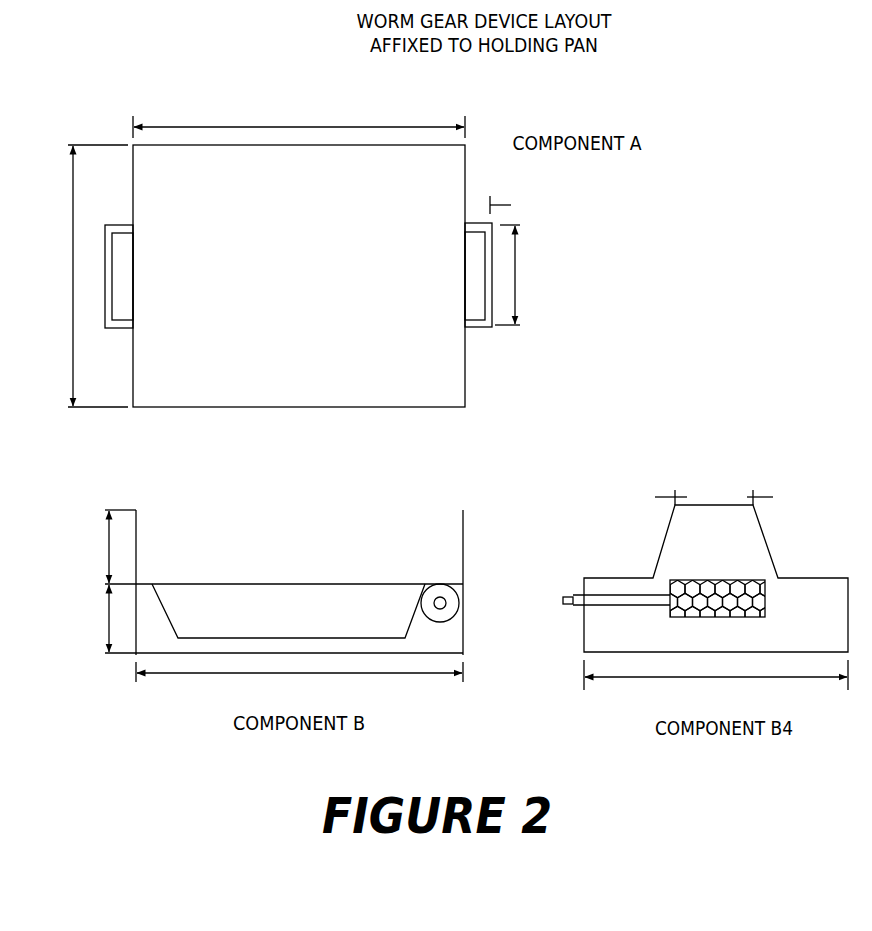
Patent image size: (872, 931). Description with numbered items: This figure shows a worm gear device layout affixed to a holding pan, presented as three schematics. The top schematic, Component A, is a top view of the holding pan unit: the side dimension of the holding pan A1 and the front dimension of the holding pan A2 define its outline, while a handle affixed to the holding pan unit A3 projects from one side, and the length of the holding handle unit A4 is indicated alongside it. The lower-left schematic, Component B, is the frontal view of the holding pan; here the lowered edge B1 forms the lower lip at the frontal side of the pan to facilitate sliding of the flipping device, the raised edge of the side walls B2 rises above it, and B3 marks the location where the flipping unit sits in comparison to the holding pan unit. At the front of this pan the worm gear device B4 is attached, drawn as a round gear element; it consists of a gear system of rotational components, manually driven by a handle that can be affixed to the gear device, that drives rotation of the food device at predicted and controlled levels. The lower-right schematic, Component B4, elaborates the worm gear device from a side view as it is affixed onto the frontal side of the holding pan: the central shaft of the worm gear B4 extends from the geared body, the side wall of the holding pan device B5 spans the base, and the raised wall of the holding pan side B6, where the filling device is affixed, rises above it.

The side dimension of the holding pan A1 is at (81, 276).
The front dimension of the holding pan A2 is at (299, 117).
The handle affixed to the holding pan unit A3 is at (536, 196).
The length of the holding handle unit A4 is at (527, 275).
The lowered edge of the holding pan (frontal view) B1 is at (299, 679).
The raised edge of the side walls of the holding pan B2 is at (101, 618).
The location of the flipping unit B3 is at (100, 546).
The worm gear device B4 is at (461, 589).
The side wall of the holding pan device B5 is at (716, 676).
The raised wall of the holding pan side B6 is at (714, 507).